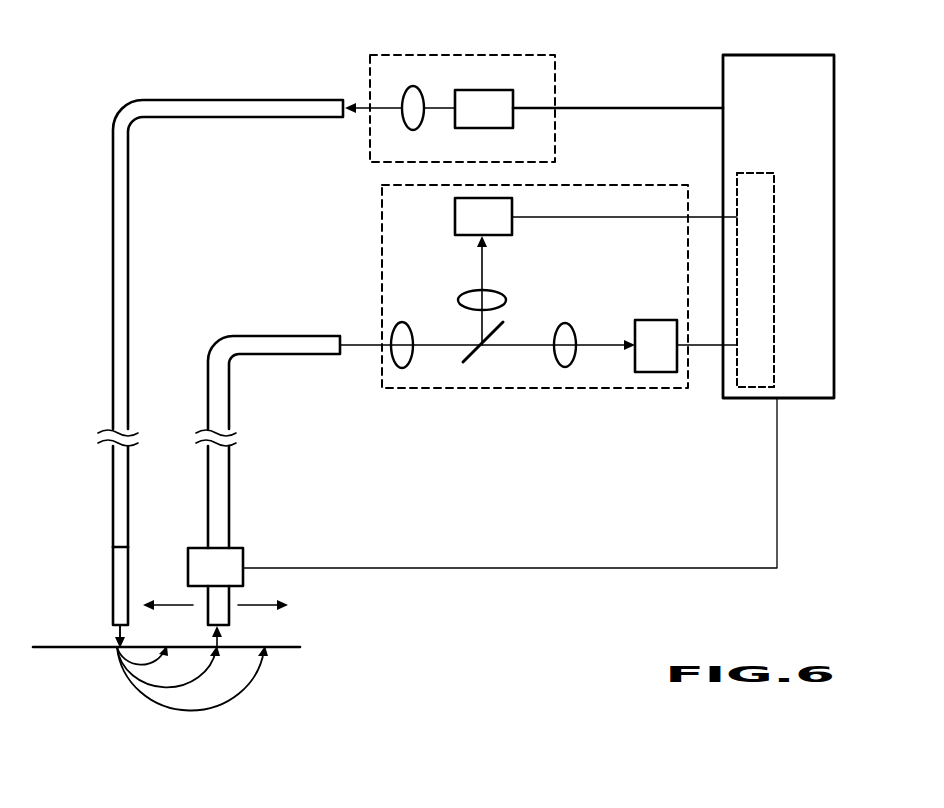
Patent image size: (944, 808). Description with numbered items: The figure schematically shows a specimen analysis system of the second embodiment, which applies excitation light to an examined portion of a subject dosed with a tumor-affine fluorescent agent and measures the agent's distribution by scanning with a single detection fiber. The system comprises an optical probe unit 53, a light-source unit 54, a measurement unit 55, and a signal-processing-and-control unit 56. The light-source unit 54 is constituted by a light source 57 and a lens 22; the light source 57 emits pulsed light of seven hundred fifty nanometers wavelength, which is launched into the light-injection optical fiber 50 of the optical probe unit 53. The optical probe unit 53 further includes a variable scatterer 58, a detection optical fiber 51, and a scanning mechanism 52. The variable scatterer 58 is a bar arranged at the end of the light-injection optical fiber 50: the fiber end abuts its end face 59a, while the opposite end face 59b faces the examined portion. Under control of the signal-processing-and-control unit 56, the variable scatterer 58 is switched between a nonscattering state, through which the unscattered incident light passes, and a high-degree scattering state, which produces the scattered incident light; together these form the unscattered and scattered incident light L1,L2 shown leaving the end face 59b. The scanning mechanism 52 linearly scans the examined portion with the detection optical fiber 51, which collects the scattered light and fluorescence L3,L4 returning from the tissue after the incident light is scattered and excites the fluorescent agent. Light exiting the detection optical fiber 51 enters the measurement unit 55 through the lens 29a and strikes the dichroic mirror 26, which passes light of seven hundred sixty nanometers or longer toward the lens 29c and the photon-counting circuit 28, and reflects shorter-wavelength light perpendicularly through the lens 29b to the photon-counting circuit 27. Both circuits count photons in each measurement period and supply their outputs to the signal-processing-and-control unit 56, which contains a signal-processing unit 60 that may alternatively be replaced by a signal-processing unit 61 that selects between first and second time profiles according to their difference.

The lens 22 is at (414, 86).
The dichroic mirror 26 is at (492, 336).
The photon-counting circuit 27 is at (455, 217).
The photon-counting circuit 28 is at (655, 320).
The lens 29a is at (402, 322).
The lens 29b is at (500, 293).
The lens 29c is at (565, 323).
The light-injection optical fiber 50 is at (113, 186).
The detection optical fiber 51 is at (289, 356).
The scanning mechanism 52 is at (237, 548).
The optical probe unit 53 is at (100, 510).
The light-source unit 54 is at (555, 68).
The measurement unit 55 is at (594, 388).
The signal-processing-and-control unit 56 is at (834, 108).
The light source 57 is at (497, 90).
The variable scatterer 58 is at (111, 566).
The end face 59a is at (122, 546).
The end face 59b is at (130, 633).
The signal-processing unit 60 is at (755, 172).
The signal-processing unit 61 is at (755, 280).
The unscattered incident light and scattered incident light L1,L2 is at (114, 637).
The scattered light and fluorescence L3,L4 is at (222, 641).